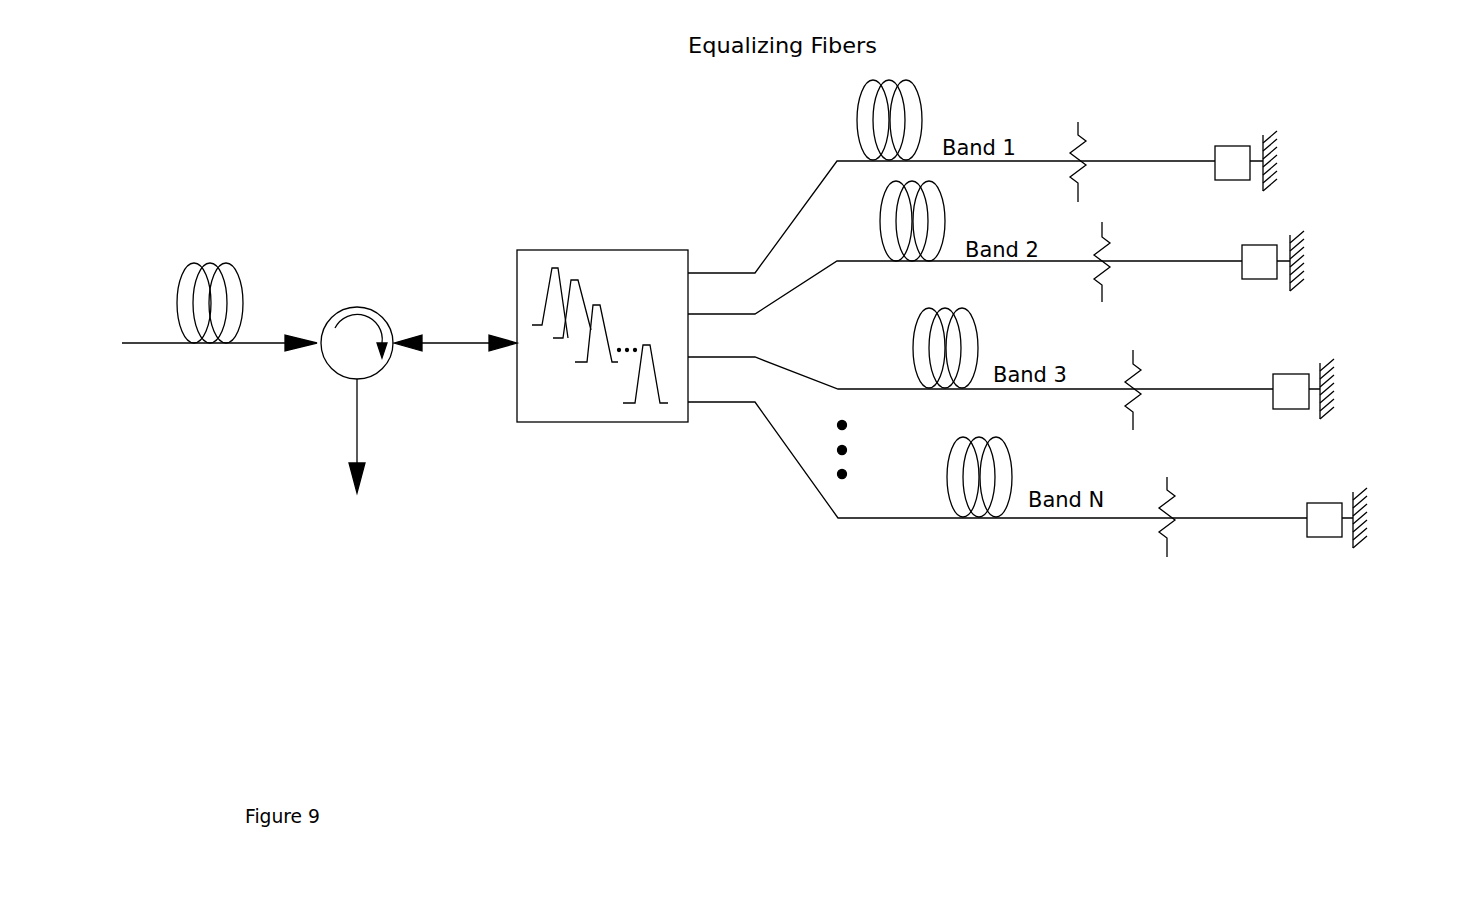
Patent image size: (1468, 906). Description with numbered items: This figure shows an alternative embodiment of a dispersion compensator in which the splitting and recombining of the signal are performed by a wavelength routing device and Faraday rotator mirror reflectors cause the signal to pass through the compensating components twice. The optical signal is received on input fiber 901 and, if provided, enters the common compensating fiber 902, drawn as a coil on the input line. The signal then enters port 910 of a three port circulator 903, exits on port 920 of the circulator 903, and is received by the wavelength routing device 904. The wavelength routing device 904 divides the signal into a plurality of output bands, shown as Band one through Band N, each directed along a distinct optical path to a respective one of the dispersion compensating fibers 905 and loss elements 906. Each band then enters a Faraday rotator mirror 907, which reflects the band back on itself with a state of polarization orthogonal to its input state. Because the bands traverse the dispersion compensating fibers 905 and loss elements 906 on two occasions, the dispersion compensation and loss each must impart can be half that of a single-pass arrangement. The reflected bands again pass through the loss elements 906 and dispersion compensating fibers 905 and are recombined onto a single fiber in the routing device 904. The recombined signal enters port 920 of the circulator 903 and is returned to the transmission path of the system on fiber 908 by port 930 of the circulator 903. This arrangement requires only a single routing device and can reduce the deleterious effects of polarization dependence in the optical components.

The input fiber 901 is at (143, 343).
The common compensating fiber 902 is at (207, 258).
The three port circulator 903 is at (358, 298).
The wavelength routing device 904 is at (600, 248).
The dispersion compensating fibers 905 is at (917, 85).
The loss elements 906 is at (1080, 126).
The Faraday rotator mirror 907 is at (1277, 137).
The fiber 908 is at (350, 435).
The port 910 is at (279, 329).
The port 920 is at (455, 329).
The port 930 is at (381, 404).